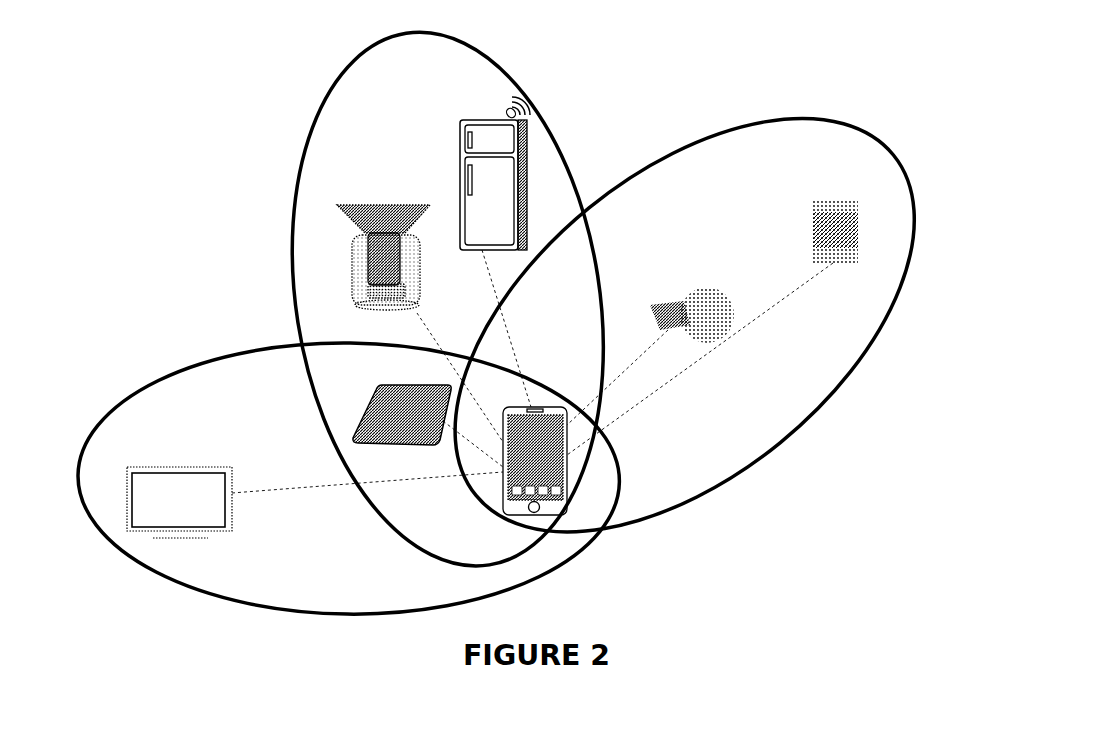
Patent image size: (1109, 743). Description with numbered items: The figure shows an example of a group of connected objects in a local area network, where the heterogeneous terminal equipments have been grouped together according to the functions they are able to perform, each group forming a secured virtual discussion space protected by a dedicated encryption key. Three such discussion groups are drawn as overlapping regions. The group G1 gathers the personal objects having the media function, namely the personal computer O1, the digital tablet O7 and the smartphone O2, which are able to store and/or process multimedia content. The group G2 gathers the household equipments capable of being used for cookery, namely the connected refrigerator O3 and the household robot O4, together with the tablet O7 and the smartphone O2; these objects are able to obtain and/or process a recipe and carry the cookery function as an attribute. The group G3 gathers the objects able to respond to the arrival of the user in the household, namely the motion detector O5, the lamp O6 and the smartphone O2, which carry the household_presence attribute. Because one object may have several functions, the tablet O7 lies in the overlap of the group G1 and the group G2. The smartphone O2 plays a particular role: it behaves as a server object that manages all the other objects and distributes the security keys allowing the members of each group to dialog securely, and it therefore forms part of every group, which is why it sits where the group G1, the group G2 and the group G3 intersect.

The group of personal objects with media function G1 is at (217, 359).
The group of household equipments for cookery G2 is at (310, 134).
The group of objects responding to user arrival G3 is at (849, 127).
The personal computer O1 is at (186, 468).
The smartphone O2 is at (560, 407).
The connected refrigerator O3 is at (498, 120).
The household robot O4 is at (405, 205).
The motion detector O5 is at (827, 200).
The lamp O6 is at (684, 303).
The digital tablet O7 is at (380, 396).